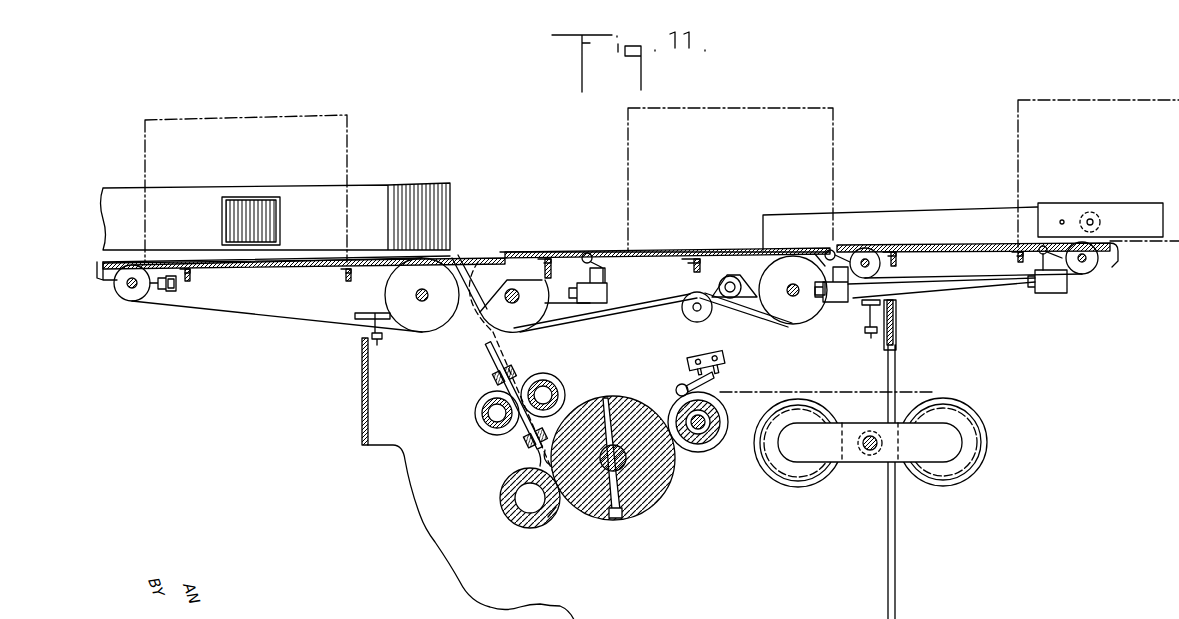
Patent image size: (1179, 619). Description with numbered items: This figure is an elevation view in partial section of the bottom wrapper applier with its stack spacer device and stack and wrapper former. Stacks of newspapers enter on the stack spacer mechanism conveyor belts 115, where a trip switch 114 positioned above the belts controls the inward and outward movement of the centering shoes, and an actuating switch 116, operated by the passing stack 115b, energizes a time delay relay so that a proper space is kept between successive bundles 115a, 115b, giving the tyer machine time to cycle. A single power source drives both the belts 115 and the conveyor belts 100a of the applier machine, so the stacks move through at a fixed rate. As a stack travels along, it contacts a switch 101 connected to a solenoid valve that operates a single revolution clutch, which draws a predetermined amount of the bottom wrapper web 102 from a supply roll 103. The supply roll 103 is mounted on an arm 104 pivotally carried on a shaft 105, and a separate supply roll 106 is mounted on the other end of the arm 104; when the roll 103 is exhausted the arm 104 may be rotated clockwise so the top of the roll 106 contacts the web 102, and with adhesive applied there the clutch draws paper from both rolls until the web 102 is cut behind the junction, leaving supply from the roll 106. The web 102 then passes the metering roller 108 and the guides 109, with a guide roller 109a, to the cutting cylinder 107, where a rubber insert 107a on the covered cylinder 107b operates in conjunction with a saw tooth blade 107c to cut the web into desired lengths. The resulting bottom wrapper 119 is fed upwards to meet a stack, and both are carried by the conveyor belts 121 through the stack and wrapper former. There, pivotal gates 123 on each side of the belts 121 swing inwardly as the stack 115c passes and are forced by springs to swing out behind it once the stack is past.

The conveyor belts 100a is at (632, 300).
The switch 101 is at (587, 252).
The bottom wrapper web 102 is at (815, 392).
The supply roll 103 is at (972, 422).
The arm 104 is at (875, 455).
The shaft 105 is at (866, 452).
The separate supply roll 106 is at (783, 478).
The cutting cylinder 107 is at (645, 500).
The rubber insert 107a is at (507, 510).
The covered cylinder 107b is at (548, 517).
The saw tooth blade 107c is at (609, 398).
The metering roller 108 is at (705, 448).
The guides 109 is at (505, 357).
The guide roller 109a is at (556, 381).
The trip switch 114 is at (1043, 255).
The conveyor belts 115 is at (988, 280).
The bundle 115a is at (1140, 110).
The bundle 115b is at (785, 107).
The stack 115c is at (315, 118).
The actuating switch 116 is at (832, 248).
The bottom wrapper 119 is at (480, 332).
The conveyor belts 121 is at (297, 320).
The pivotal gates 123 is at (233, 218).